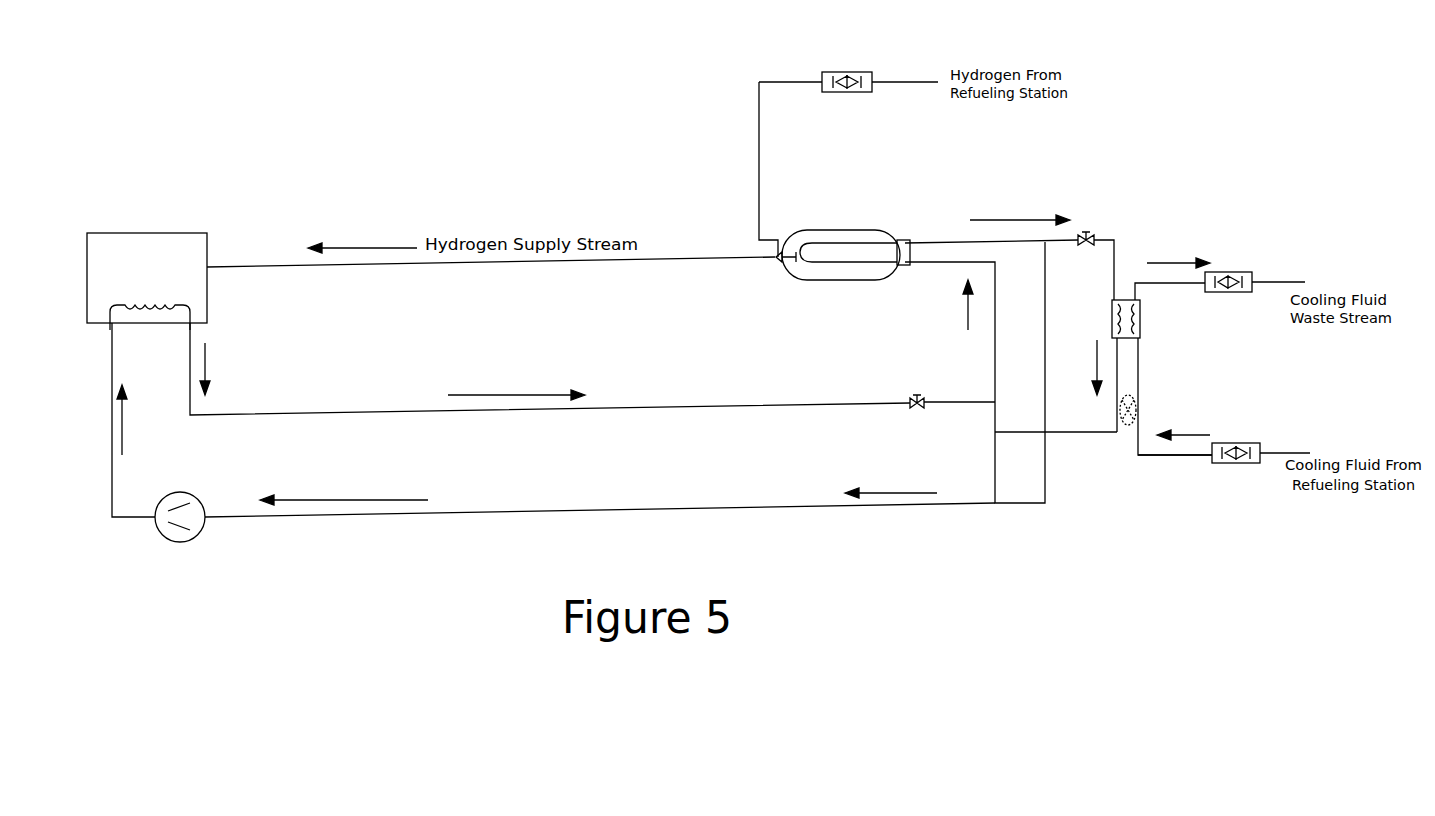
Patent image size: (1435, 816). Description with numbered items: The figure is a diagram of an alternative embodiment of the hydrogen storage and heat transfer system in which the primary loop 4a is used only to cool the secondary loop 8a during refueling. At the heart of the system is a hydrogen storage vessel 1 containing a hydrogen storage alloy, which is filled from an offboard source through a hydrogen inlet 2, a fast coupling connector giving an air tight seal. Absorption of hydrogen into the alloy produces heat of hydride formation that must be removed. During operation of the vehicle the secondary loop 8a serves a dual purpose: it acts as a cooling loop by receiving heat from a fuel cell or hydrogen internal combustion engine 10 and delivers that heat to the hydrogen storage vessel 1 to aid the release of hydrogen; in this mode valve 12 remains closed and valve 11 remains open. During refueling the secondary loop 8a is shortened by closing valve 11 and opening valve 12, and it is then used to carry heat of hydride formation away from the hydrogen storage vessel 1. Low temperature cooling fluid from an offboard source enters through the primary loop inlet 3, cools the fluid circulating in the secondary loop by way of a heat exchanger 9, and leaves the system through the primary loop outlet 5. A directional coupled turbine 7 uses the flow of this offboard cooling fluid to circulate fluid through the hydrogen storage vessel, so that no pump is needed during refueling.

The hydrogen storage vessel 1 is at (843, 243).
The hydrogen inlet 2 is at (847, 70).
The primary loop inlet 3 is at (1236, 441).
The primary loop 4a is at (1175, 474).
The primary loop outlet 5 is at (1228, 270).
The directional coupled turbine 7 is at (1117, 410).
The secondary loop 8a is at (575, 517).
The heat exchanger 9 is at (1134, 319).
The fuel cell or hydrogen internal combustion engine 10 is at (147, 281).
The valve 11 is at (915, 415).
The valve 12 is at (1091, 226).